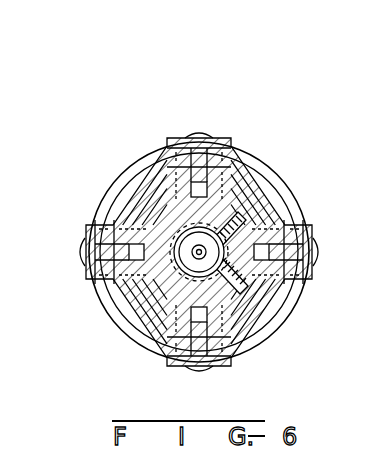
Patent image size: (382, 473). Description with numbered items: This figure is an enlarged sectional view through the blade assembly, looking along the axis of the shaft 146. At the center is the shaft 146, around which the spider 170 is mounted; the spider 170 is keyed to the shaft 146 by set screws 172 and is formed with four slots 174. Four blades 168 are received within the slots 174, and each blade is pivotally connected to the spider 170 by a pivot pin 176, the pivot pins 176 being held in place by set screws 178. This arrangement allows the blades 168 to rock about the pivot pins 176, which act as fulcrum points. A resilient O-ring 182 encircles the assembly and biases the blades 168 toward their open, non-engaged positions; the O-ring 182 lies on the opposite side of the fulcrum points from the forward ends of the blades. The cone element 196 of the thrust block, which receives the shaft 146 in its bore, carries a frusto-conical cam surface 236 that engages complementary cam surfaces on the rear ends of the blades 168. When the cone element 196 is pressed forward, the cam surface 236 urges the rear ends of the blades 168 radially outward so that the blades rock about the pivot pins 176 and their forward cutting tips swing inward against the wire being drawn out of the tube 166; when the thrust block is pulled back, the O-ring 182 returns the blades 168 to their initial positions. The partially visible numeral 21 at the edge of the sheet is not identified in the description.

The shaft 146 is at (152, 285).
The tube 166 is at (180, 265).
The blades 168 is at (196, 136).
The spider 170 is at (283, 175).
The set screws 172 is at (273, 170).
The slots 174 is at (250, 158).
The pivot pins 176 is at (213, 138).
The set screws 178 is at (232, 138).
The O-ring 182 is at (140, 178).
The cone element 196 is at (262, 155).
The frusto-conical cam surface 236 is at (262, 343).
The housing 21 is at (374, 250).